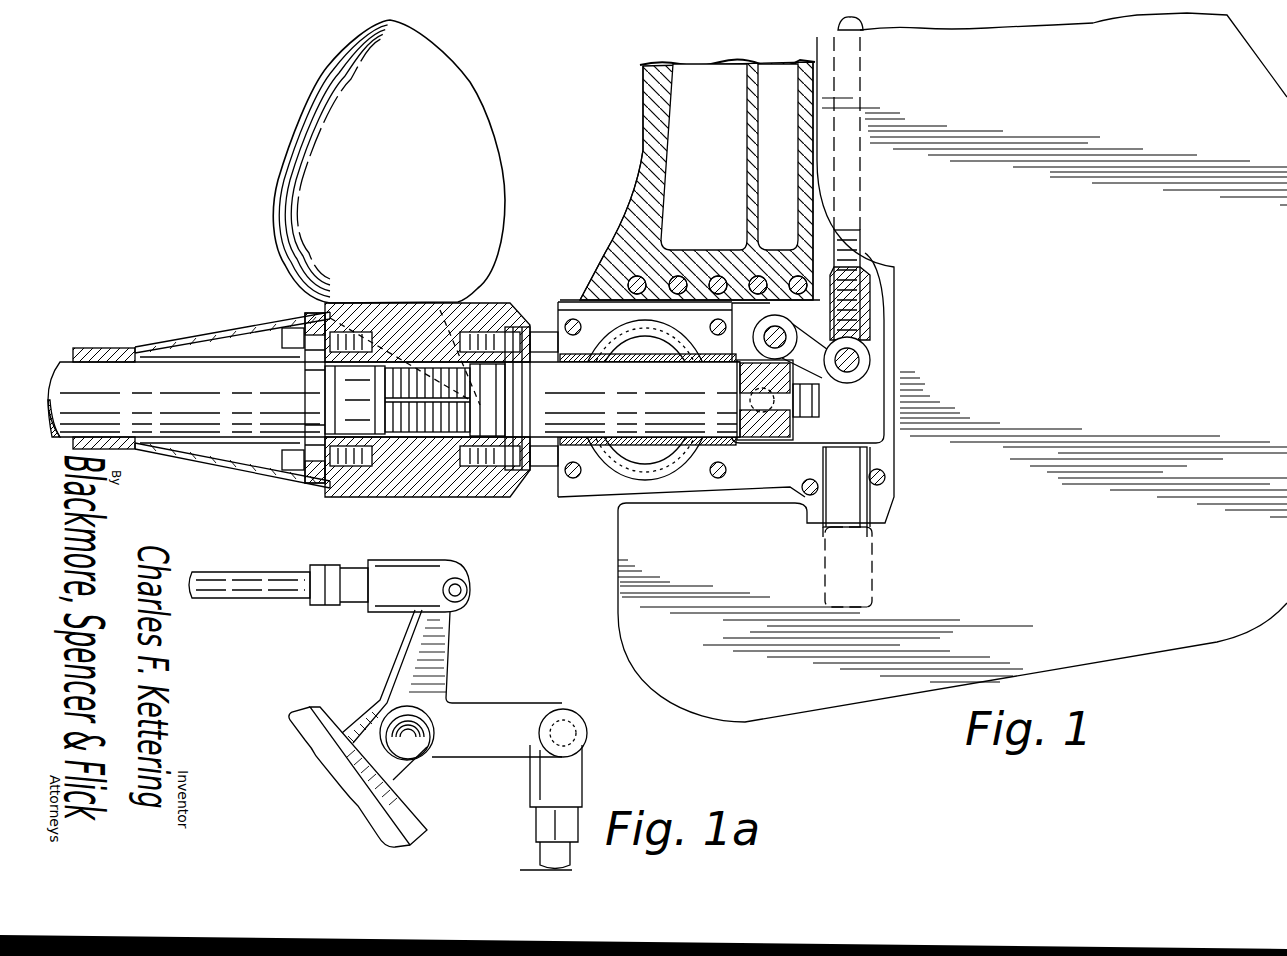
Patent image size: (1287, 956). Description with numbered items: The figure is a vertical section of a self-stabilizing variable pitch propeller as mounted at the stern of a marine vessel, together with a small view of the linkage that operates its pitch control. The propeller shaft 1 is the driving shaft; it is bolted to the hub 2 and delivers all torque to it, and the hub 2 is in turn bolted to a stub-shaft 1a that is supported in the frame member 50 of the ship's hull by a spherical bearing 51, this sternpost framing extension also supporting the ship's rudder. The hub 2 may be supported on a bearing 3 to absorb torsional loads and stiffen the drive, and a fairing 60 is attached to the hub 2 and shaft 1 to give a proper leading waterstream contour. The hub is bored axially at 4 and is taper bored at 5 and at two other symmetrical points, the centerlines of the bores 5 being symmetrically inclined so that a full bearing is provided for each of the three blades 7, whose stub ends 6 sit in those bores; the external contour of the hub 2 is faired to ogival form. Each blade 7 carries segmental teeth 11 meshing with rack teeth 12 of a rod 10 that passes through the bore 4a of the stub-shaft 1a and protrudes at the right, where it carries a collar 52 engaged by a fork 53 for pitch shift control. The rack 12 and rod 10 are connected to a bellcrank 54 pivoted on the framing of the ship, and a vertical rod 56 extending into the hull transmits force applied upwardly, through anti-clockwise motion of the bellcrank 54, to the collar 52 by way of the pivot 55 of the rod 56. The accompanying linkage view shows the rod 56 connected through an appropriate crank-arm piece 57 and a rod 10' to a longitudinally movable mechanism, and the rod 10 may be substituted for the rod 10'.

In FIG. 1, the propeller shaft 1 is at (64, 372).
In FIG. 1, the stub-shaft 1a is at (624, 378).
In FIG. 1, the hub 2 is at (340, 478).
In FIG. 1, the bearing 3 is at (562, 486).
In FIG. 1, the axial bore 4 is at (338, 420).
In FIG. 1, the bore of stub-shaft 4a is at (658, 372).
In FIG. 1, the taper bore 5 is at (452, 312).
In FIG. 1, the stub end 6 is at (318, 314).
In FIG. 1, the blade 7 is at (468, 120).
In FIG. 1, the rod 10 is at (834, 407).
In FIG. 1A, the rod 10' is at (329, 573).
In FIG. 1, the segmental teeth 11 is at (466, 395).
In FIG. 1, the rack teeth 12 is at (402, 434).
In FIG. 1, the frame member 50 is at (654, 97).
In FIG. 1, the spherical bearing 51 is at (606, 328).
In FIG. 1, the collar 52 is at (796, 436).
In FIG. 1, the fork 53 is at (772, 362).
In FIG. 1, the bellcrank 54 is at (820, 383).
In FIG. 1, the pivot 55 is at (862, 343).
In FIG. 1, the rod 56 is at (838, 28).
In FIG. 1A, the rod 56 is at (546, 862).
In FIG. 1A, the crank-arm piece 57 is at (494, 720).
In FIG. 1, the fairing 60 is at (240, 322).